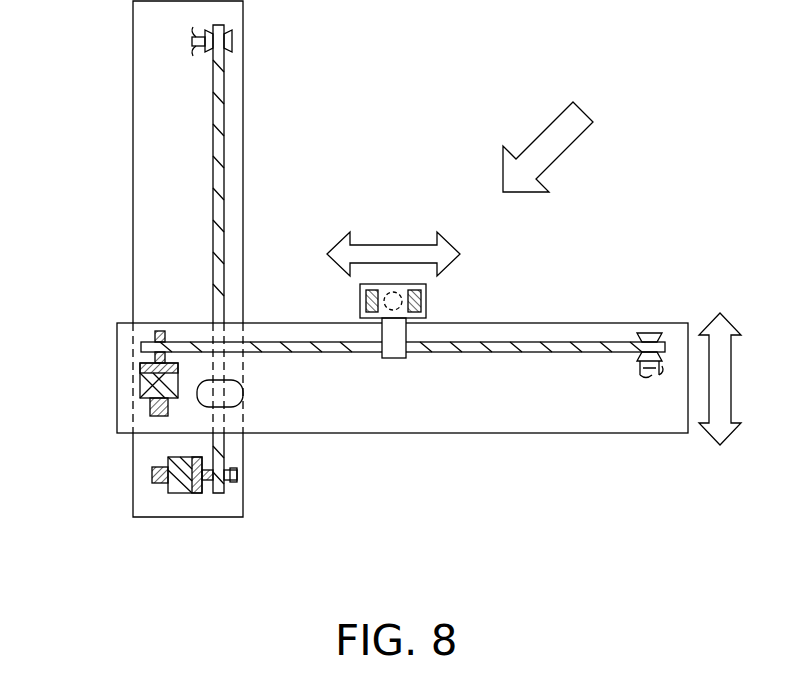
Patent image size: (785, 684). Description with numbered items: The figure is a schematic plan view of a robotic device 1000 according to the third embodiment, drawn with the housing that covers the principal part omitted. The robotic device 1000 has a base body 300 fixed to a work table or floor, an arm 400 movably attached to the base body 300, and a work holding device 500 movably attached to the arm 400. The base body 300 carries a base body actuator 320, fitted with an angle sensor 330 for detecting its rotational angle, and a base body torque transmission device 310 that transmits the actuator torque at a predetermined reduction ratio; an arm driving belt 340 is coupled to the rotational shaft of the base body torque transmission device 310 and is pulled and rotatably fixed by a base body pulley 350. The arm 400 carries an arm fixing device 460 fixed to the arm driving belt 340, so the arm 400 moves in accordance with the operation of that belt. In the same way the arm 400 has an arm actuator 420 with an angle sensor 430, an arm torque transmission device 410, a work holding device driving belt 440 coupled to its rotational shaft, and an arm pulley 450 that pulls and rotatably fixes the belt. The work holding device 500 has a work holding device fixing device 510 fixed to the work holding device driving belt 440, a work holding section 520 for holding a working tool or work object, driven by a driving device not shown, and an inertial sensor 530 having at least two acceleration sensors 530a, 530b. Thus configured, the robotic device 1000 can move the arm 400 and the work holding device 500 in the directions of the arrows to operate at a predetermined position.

The robotic device 1000 is at (489, 49).
The base body 300 is at (143, 165).
The base body torque transmission device 310 is at (200, 497).
The base body actuator 320 is at (185, 497).
The angle sensor 330 is at (152, 475).
The arm driving belt 340 is at (218, 128).
The base body pulley 350 is at (200, 52).
The arm 400 is at (448, 425).
The arm torque transmission device 410 is at (143, 370).
The arm actuator 420 is at (143, 390).
The angle sensor 430 is at (150, 405).
The work holding device driving belt 440 is at (558, 340).
The arm pulley 450 is at (637, 372).
The arm fixing device 460 is at (243, 393).
The work holding device 500 is at (399, 232).
The work holding device fixing device 510 is at (393, 357).
The work holding section 520 is at (360, 300).
The inertial sensor 530 is at (394, 229).
The acceleration sensor 530a is at (372, 290).
The acceleration sensor 530b is at (413, 290).